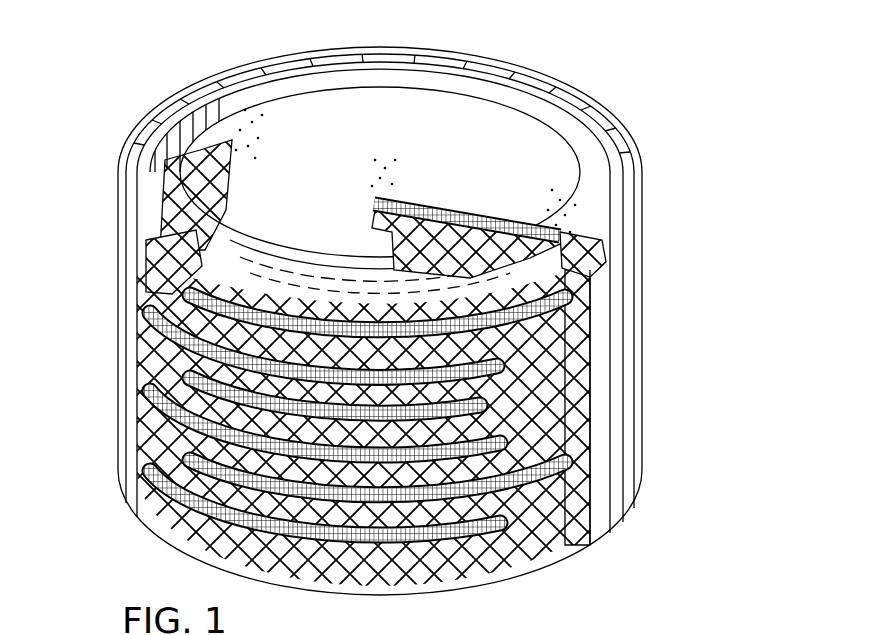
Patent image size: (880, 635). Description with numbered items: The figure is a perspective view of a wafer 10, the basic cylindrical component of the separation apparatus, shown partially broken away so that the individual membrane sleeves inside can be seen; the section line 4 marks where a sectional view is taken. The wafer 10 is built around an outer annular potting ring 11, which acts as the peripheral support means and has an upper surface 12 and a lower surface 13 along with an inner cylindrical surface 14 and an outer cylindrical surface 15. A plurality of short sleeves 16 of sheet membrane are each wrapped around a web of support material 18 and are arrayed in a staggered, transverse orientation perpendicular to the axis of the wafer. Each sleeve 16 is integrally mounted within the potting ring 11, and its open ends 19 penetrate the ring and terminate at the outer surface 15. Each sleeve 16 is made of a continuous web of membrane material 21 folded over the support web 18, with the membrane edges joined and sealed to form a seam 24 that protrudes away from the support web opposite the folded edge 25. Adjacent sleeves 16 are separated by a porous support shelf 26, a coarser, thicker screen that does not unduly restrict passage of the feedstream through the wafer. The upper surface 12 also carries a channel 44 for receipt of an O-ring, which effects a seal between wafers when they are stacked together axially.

The section line 4- 4 is at (407, 70).
The wafer 10 is at (635, 71).
The outer annular potting ring 11 is at (660, 259).
The upper surface 12 is at (630, 143).
The lower surface 13 is at (600, 525).
The inner cylindrical surface 14 is at (227, 117).
The outer cylindrical surface 15 is at (620, 393).
The sleeve 16 is at (446, 103).
The support material 18 is at (468, 222).
The end 19 is at (463, 520).
The membrane material 21 is at (482, 113).
The seam 24 is at (573, 200).
The folded edge 25 is at (220, 147).
The porous support shelf 26 is at (200, 183).
The channel 44 is at (157, 130).